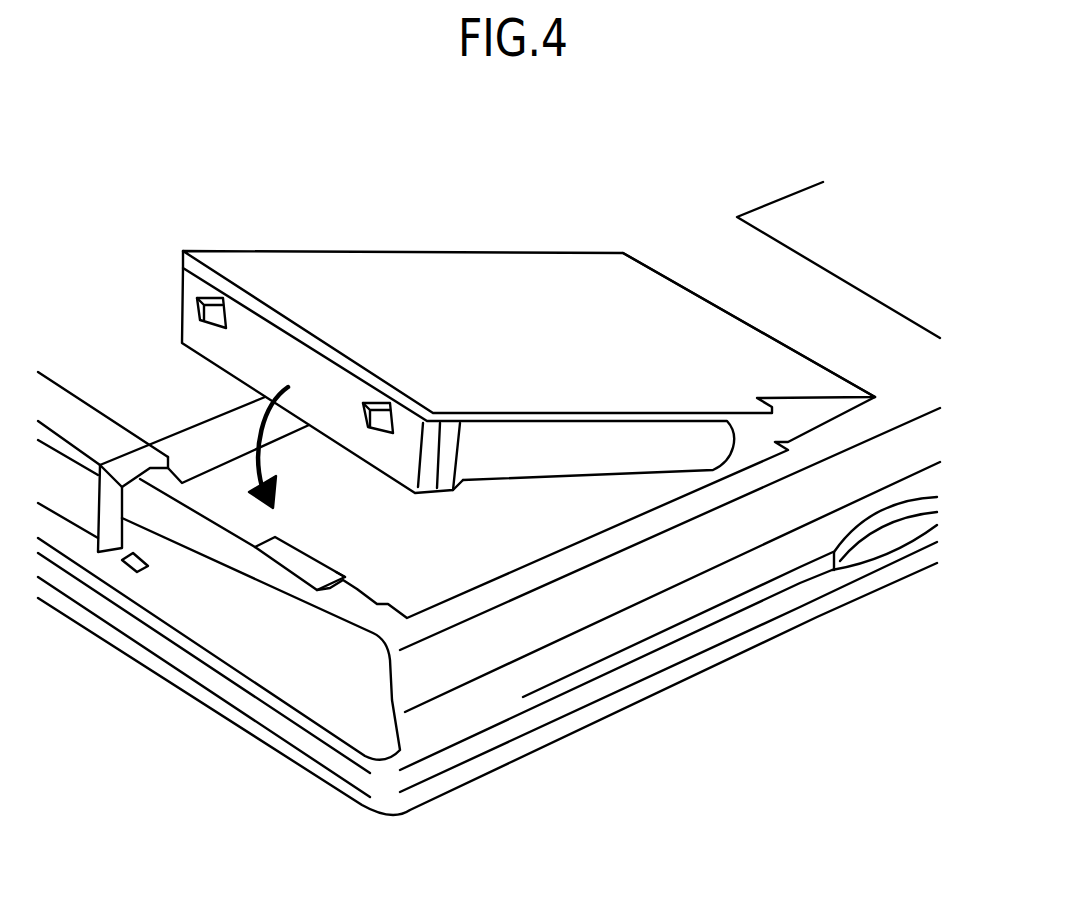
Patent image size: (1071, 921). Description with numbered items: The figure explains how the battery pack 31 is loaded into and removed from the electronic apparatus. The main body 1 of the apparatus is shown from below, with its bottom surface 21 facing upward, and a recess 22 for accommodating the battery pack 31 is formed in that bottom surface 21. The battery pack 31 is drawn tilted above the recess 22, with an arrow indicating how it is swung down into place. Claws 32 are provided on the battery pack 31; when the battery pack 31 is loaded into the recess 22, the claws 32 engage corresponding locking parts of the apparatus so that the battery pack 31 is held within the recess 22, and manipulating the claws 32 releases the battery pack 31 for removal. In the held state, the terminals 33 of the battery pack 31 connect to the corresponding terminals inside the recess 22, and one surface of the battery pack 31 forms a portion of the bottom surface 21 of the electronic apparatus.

The main body 1 is at (775, 640).
The bottom surface 21 is at (708, 233).
The recess 22 is at (470, 565).
The battery pack 31 is at (493, 273).
The claws 32 is at (380, 407).
The terminals 33 is at (757, 337).